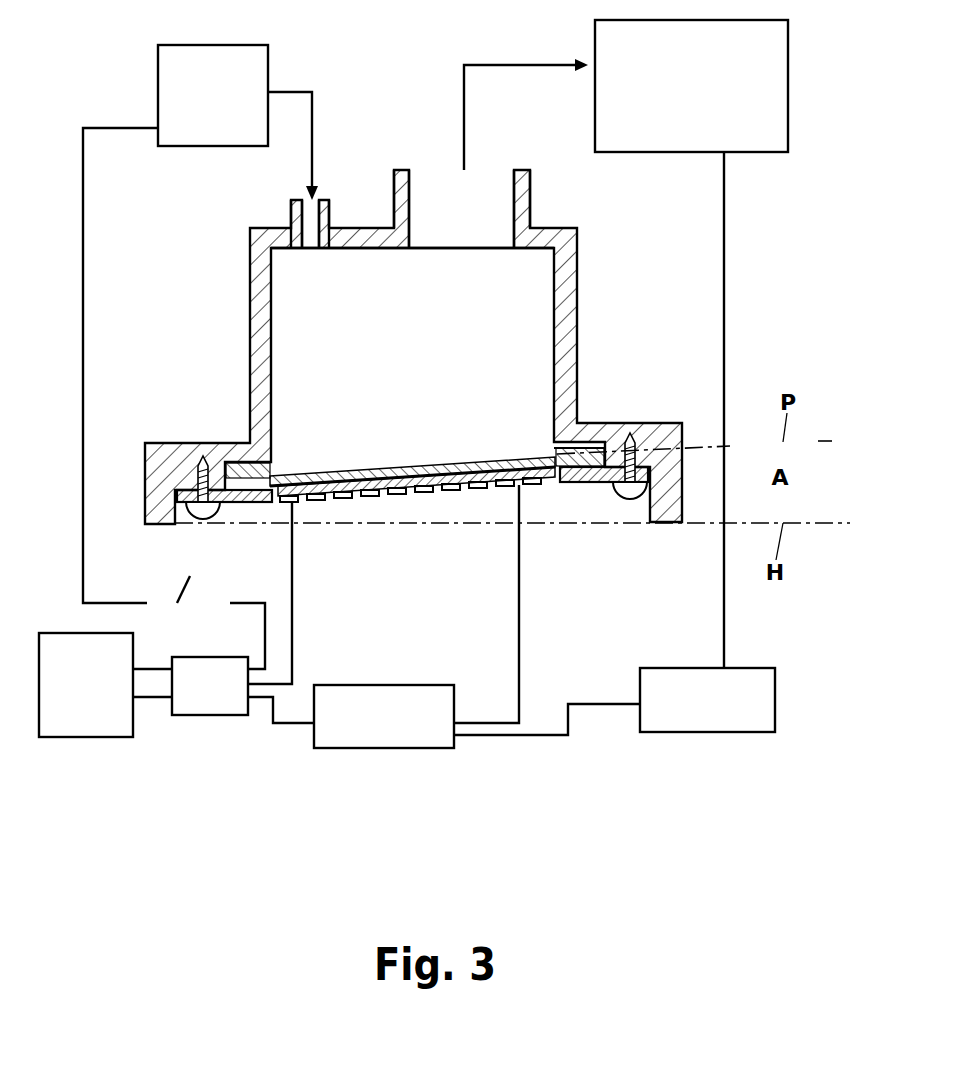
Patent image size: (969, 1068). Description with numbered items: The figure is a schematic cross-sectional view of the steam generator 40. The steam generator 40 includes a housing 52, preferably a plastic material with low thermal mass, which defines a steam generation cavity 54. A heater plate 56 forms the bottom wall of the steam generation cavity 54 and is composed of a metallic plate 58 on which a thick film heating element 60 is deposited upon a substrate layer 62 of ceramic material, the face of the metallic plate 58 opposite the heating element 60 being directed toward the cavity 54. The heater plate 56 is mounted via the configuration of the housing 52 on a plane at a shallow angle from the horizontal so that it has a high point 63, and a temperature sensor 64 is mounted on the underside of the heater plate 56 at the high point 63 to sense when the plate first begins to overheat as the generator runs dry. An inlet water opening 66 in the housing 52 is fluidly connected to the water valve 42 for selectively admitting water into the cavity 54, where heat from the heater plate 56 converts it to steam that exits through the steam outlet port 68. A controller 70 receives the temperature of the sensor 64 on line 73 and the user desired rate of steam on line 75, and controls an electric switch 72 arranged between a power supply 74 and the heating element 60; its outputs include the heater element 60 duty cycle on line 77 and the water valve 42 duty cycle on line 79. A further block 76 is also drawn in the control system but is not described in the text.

The steam generator 40 is at (421, 347).
The water valve 42 is at (213, 95).
The housing 52 is at (248, 323).
The steam generation cavity 54 is at (409, 359).
The heater plate 56 is at (394, 453).
The metallic plate 58 is at (348, 468).
The thick film heating element 60 is at (535, 490).
The substrate layer 62 is at (440, 492).
The high point 63 is at (512, 470).
The temperature sensor 64 is at (542, 470).
The inlet water opening 66 is at (308, 249).
The steam outlet port 68 is at (512, 226).
The controller 70 is at (373, 748).
The electric switch 72 is at (212, 715).
The line 73 is at (519, 662).
The power supply 74 is at (123, 737).
The line 75 is at (523, 735).
The pressure controller 76 is at (673, 732).
The line 77 is at (292, 620).
The line 79 is at (193, 577).